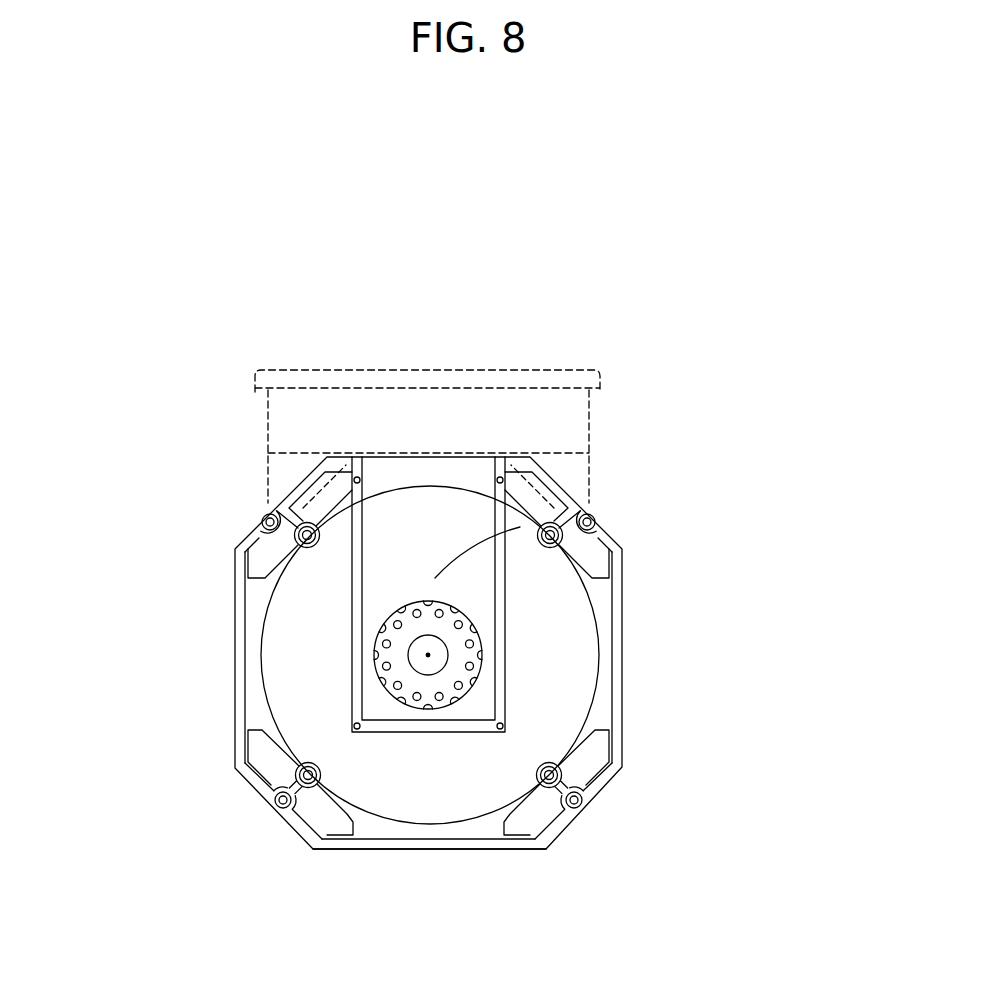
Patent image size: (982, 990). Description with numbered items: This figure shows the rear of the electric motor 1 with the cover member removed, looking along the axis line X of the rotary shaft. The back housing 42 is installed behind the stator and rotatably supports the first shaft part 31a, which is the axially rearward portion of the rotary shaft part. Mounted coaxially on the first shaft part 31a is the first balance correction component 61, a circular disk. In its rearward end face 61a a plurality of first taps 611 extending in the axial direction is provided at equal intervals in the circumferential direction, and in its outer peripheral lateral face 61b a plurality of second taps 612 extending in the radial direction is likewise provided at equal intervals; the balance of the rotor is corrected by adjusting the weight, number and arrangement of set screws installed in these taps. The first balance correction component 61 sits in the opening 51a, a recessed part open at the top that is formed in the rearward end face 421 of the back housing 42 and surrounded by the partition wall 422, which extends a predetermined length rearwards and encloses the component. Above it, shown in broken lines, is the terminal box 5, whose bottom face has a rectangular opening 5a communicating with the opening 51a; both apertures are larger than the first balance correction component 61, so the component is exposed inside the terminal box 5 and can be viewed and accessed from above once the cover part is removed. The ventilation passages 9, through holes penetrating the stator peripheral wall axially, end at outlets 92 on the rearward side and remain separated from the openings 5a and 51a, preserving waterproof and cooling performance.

The electric motor 1 is at (617, 193).
The terminal box 5 is at (495, 344).
The opening 5a is at (435, 453).
The opening 51a is at (355, 475).
The back housing 42 is at (623, 592).
The end face 421 is at (553, 573).
The partition wall 422 is at (435, 578).
The first balance correction component 61 is at (455, 670).
The end face 61a is at (490, 697).
The outer peripheral lateral face 61b is at (466, 620).
The first taps 611 is at (441, 701).
The second taps 612 is at (482, 650).
The first shaft part 31a is at (410, 648).
The axis line X is at (428, 655).
The ventilation passage 9 is at (312, 812).
The outlet 92 is at (345, 840).